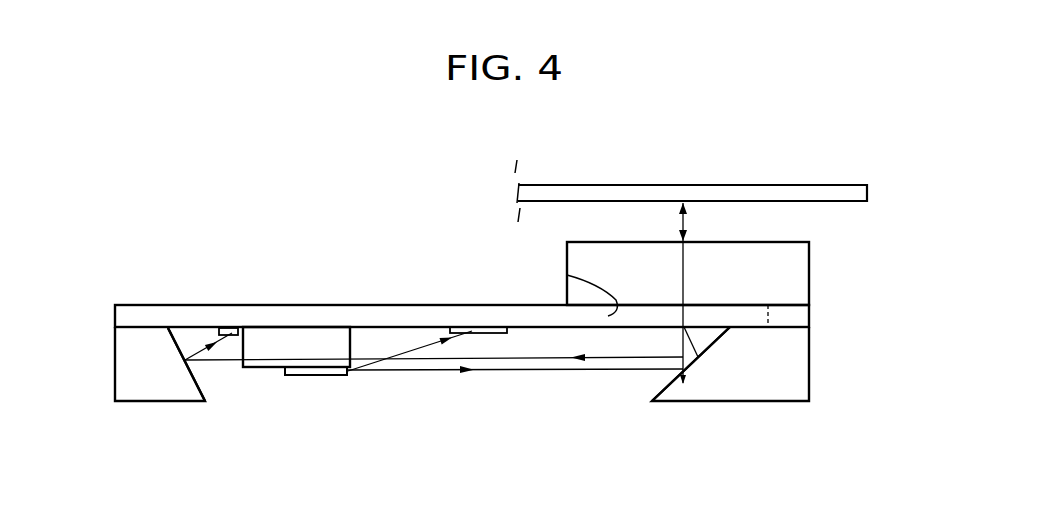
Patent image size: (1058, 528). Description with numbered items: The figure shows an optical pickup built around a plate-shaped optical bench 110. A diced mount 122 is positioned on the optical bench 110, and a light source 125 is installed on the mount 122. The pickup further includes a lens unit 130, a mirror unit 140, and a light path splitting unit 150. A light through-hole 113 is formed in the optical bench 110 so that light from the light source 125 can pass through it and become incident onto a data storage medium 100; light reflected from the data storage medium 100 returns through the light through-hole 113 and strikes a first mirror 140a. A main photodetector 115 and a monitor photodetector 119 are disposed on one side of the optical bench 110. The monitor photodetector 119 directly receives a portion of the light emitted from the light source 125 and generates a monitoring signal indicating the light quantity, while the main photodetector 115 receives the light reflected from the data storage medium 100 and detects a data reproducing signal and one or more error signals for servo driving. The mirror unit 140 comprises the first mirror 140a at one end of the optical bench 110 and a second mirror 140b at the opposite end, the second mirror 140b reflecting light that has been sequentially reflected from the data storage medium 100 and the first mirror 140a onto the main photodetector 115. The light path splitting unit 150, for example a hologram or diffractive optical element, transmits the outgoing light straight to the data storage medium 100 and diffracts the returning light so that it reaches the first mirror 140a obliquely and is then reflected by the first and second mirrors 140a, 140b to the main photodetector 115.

The data storage medium 100 is at (855, 193).
The optical bench 110 is at (126, 316).
The light through-hole 113 is at (567, 275).
The main photodetector 115 is at (228, 333).
The monitor photodetector 119 is at (488, 333).
The diced mount 122 is at (260, 348).
The light source 125 is at (318, 376).
The lens unit 130 is at (783, 277).
The mirror unit 140 is at (822, 370).
The first mirror 140a is at (662, 390).
The second mirror 140b is at (203, 388).
The light path splitting unit 150 is at (653, 315).